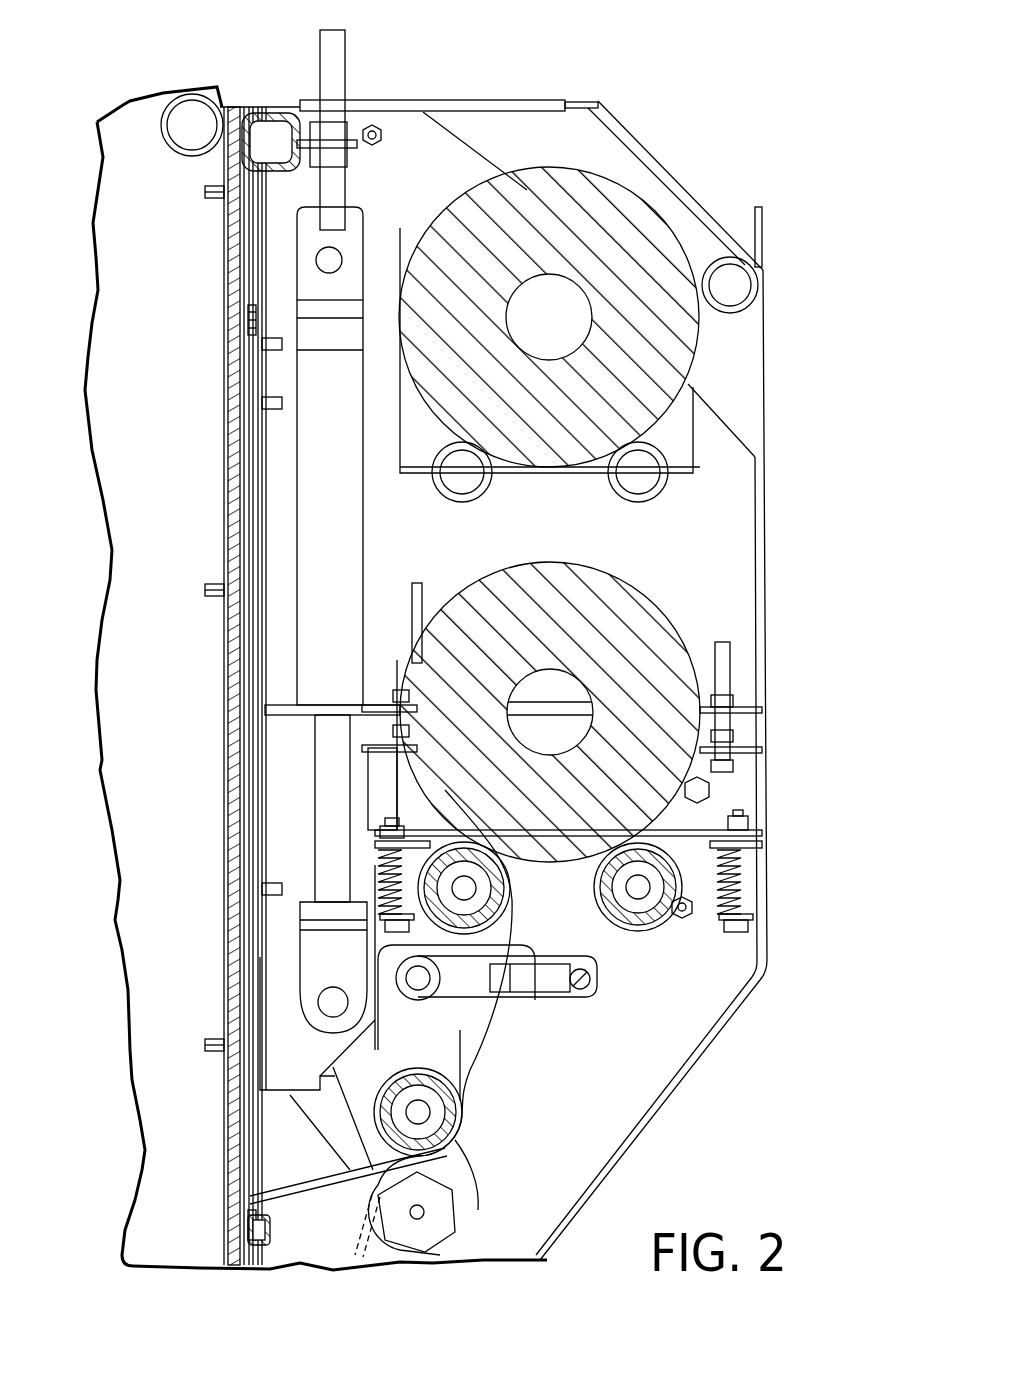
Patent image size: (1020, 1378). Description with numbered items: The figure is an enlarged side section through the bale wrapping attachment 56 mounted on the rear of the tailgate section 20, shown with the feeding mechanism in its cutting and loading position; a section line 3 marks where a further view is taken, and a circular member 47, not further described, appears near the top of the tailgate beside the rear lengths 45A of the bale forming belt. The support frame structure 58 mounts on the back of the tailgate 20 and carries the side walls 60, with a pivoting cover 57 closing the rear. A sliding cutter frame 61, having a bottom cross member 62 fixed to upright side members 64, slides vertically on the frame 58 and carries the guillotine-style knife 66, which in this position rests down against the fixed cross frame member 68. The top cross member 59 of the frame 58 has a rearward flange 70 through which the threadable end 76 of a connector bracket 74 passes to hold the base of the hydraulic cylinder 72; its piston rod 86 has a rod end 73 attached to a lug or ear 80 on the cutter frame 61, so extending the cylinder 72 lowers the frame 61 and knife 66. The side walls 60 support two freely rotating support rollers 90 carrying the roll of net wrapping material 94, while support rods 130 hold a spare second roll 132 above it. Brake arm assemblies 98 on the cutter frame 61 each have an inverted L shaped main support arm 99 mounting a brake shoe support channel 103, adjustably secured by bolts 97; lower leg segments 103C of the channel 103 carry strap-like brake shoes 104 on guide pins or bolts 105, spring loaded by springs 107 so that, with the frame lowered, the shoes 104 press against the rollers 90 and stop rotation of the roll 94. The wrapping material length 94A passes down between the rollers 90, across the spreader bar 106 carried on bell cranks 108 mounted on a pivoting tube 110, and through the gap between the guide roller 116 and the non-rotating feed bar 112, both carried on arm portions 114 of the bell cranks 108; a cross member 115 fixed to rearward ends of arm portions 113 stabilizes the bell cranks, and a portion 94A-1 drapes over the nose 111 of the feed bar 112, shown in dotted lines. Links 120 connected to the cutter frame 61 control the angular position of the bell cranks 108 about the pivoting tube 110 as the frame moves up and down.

The section line 3- 3 is at (470, 48).
The tailgate section 20 is at (125, 728).
The rear lengths of bale forming belt 45A is at (235, 415).
The tube ring 47 is at (185, 124).
The wrapping material dispensing and wrapping attachment 56 is at (190, 652).
The pivoting cover 57 is at (672, 180).
The support frame structure 58 is at (208, 772).
The top cross member 59 is at (255, 115).
The side walls 60 is at (730, 548).
The sliding cutter frame 61 is at (225, 915).
The bottom cross member 62 is at (240, 1100).
The upright side members 64 is at (248, 438).
The guillotine-style knife 66 is at (262, 1150).
The fixed cross frame member 68 is at (250, 330).
The flange 70 is at (318, 152).
The hydraulic cylinder 72 is at (352, 560).
The rod end 73 is at (268, 960).
The connector bracket 74 is at (362, 165).
The threadable end 76 is at (345, 72).
The lug or ear 80 is at (265, 978).
The piston rod 86 is at (335, 725).
The support rollers 90 is at (512, 880).
The roll of net wrapping material 94 is at (563, 590).
The wrapping material length 94A is at (462, 1095).
The portion of wrapping material length 94A-1 is at (262, 1222).
The bolts 97 is at (405, 635).
The brake arm assemblies 98 is at (692, 655).
The main support arm 99 is at (280, 765).
The brake shoe support channels 103 is at (742, 792).
The lower leg segments 103C is at (385, 852).
The brake shoes 104 is at (695, 868).
The guide pins or bolts 105 is at (762, 826).
The spreader bar 106 is at (500, 1000).
The springs 107 is at (388, 898).
The bell cranks 108 is at (470, 1035).
The pivoting tube 110 is at (420, 1068).
The nose portion 111 is at (385, 1262).
The wrapping material feed bar 112 is at (475, 1258).
The arm portions 113 is at (590, 972).
The arm portions 114 is at (455, 1198).
The cross member 115 is at (590, 998).
The wrapping material guide roller 116 is at (350, 1050).
The links 120 is at (335, 1110).
The support rods 130 is at (615, 500).
The second roll of wrapping material 132 is at (572, 172).